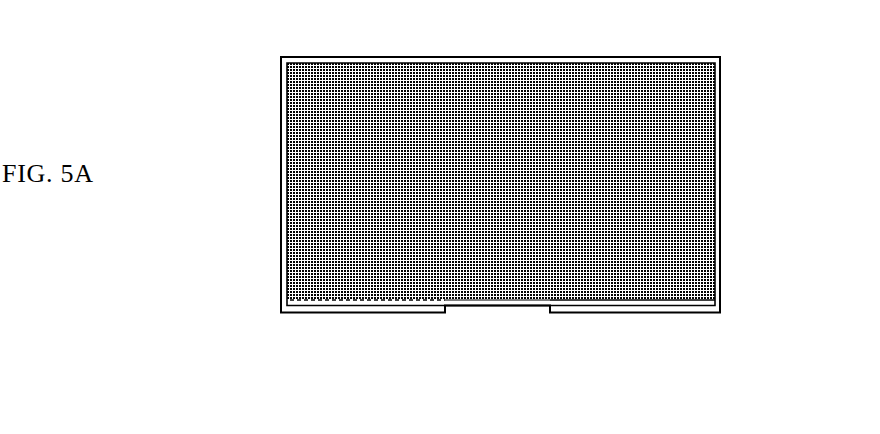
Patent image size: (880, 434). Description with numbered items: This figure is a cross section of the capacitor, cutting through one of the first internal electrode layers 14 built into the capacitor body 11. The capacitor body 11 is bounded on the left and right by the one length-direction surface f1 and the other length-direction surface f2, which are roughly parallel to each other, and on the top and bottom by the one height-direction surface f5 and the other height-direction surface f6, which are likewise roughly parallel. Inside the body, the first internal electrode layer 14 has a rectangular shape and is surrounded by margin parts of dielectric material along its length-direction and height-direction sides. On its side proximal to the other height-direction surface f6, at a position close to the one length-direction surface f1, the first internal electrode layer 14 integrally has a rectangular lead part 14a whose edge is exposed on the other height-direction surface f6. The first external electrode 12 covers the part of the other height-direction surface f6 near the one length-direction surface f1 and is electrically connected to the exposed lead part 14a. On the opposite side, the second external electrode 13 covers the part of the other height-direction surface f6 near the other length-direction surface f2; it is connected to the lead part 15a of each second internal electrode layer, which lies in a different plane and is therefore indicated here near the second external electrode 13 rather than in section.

The capacitor body 11 is at (280, 128).
The first external electrode 12 is at (363, 314).
The second external electrode 13 is at (637, 315).
The first internal electrode layer 14 is at (315, 210).
The lead part 14a is at (318, 314).
The lead part 15a is at (685, 315).
The one length-direction surface f1 is at (281, 172).
The other length-direction surface f2 is at (722, 173).
The one height-direction surface f5 is at (489, 57).
The other height-direction surface f6 is at (492, 307).